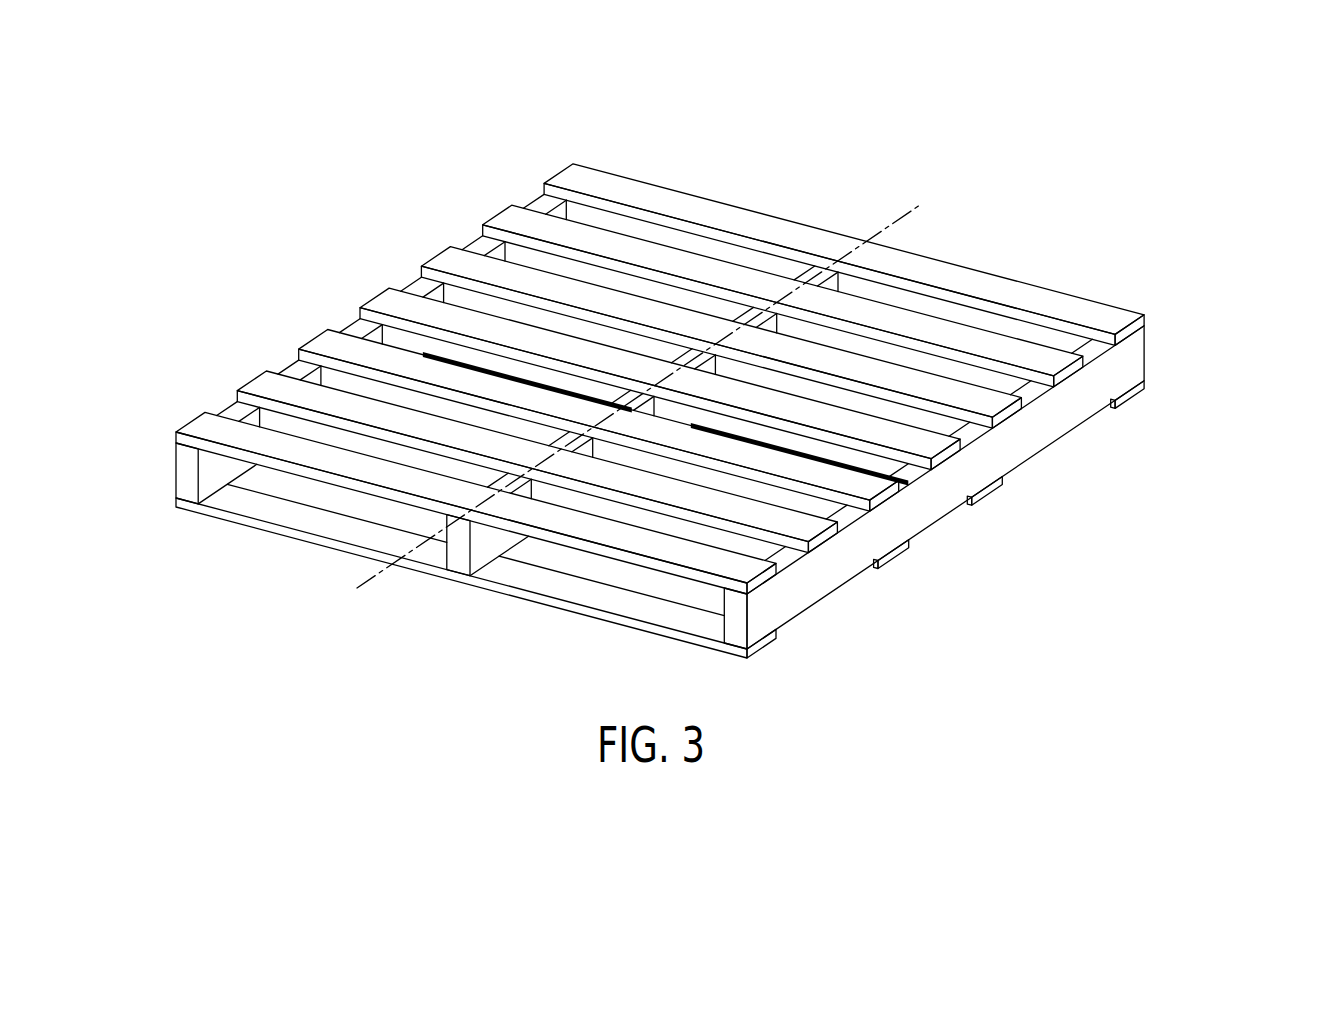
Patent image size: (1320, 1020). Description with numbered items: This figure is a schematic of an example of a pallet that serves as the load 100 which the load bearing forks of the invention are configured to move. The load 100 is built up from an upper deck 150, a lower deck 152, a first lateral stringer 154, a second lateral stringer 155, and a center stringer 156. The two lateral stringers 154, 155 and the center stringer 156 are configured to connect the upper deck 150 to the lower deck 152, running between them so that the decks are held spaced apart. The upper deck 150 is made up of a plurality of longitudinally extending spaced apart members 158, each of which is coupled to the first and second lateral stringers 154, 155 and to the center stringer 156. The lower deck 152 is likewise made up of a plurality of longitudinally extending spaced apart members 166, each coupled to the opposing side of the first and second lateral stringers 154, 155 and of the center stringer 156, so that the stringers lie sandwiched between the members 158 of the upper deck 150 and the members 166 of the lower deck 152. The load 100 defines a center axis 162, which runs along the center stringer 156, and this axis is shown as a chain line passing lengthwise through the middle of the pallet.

The load 100 is at (701, 404).
The upper deck 150 is at (298, 330).
The lower deck 152 is at (898, 568).
The first lateral stringer 154 is at (185, 467).
The second lateral stringer 155 is at (735, 621).
The center stringer 156 is at (458, 562).
The longitudinally extending spaced apart members 158 is at (1020, 432).
The center axis 162 is at (895, 220).
The longitudinally extending spaced apart members 166 is at (900, 552).